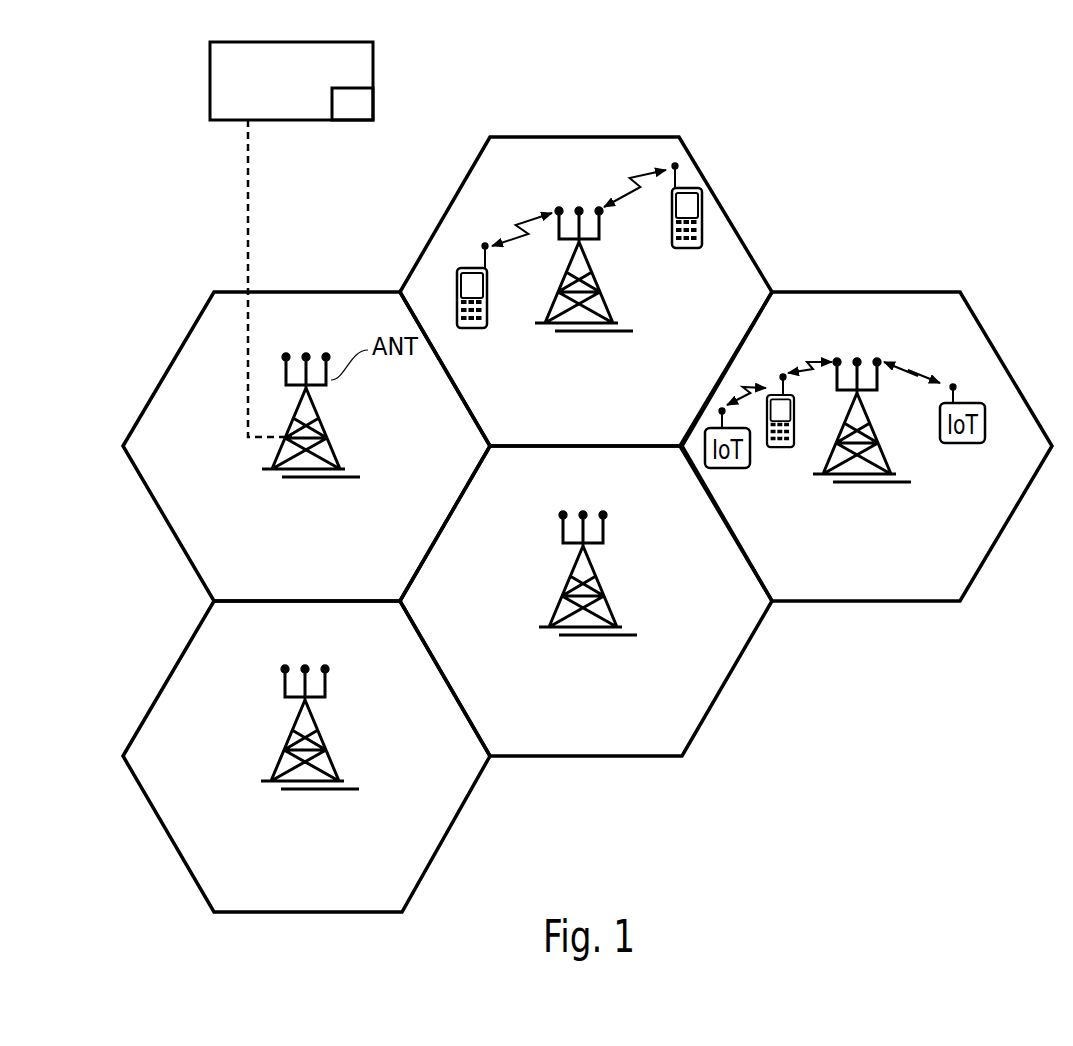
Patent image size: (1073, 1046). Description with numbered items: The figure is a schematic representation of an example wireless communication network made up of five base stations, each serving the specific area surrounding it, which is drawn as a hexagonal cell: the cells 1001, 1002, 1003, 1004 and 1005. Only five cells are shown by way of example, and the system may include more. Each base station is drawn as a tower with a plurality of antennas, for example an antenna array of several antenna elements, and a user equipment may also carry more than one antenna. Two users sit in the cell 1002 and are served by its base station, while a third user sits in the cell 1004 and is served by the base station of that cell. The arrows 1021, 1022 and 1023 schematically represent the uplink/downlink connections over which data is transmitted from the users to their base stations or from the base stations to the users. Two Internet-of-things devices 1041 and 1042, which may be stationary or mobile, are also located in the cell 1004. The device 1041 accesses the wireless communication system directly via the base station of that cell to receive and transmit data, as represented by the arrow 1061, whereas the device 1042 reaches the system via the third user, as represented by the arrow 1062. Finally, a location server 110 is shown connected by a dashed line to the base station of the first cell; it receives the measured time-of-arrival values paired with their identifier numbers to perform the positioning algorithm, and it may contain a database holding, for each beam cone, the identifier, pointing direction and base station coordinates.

The cell 1001 is at (306, 446).
The cell 1002 is at (586, 291).
The cell 1003 is at (306, 756).
The cell 1004 is at (867, 446).
The cell 1005 is at (586, 601).
The arrow 1021 is at (535, 195).
The arrow 1022 is at (642, 168).
The arrow 1023 is at (795, 370).
The IoT device 1041 is at (960, 443).
The IoT device 1042 is at (733, 468).
The arrow 1061 is at (897, 360).
The arrow 1062 is at (758, 390).
The location server 110 is at (290, 120).